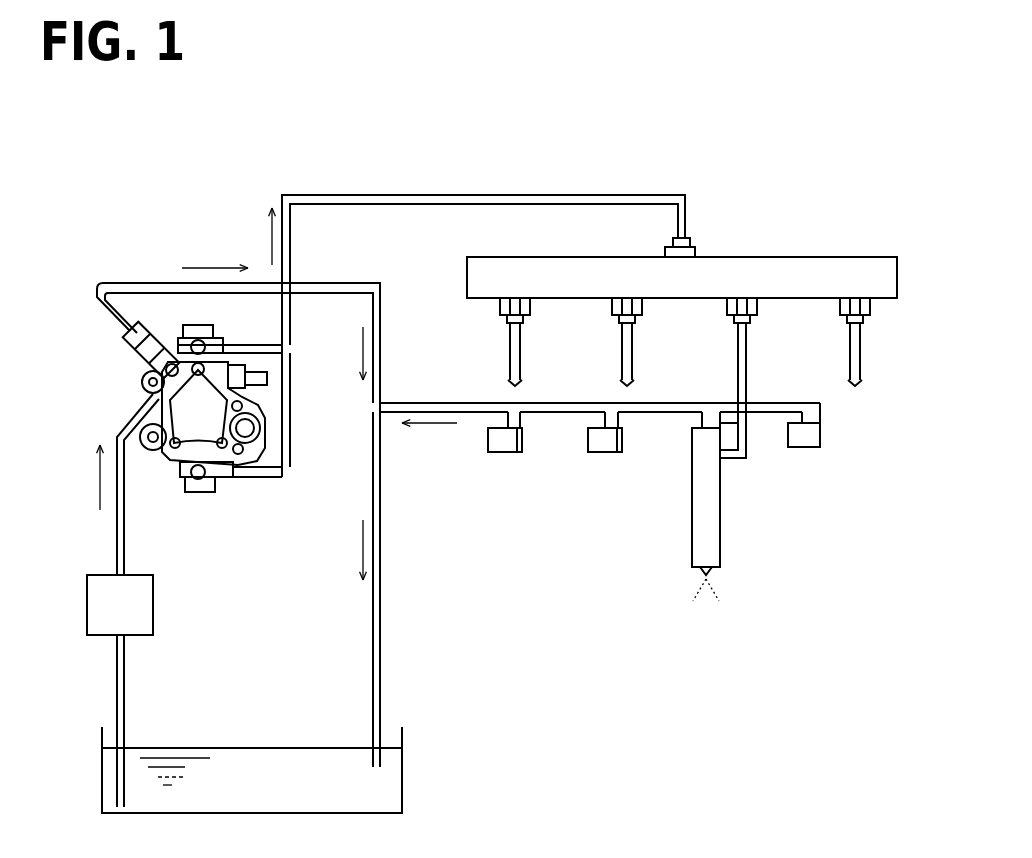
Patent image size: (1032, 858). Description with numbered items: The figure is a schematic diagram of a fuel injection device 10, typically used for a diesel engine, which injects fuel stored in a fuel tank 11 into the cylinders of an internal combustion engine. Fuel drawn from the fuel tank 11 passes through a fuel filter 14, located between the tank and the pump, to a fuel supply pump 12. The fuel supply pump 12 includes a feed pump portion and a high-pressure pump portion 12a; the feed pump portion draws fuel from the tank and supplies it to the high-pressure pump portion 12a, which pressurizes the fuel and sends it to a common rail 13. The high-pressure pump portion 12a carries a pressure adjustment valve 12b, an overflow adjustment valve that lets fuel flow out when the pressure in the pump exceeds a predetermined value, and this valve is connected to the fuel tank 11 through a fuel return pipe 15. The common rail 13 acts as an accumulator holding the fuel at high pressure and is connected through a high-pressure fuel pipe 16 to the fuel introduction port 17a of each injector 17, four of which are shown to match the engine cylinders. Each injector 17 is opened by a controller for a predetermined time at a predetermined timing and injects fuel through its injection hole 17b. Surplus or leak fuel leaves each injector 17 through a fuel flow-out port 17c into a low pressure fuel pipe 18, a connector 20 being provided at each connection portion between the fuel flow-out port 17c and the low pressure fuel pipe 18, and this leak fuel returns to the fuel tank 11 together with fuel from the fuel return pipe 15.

The fuel injection device 10 is at (185, 193).
The fuel tank 11 is at (402, 786).
The fuel supply pump 12 is at (163, 453).
The high-pressure pump portion 12a is at (210, 423).
The pressure adjustment valve 12b is at (134, 354).
The common rail 13 is at (793, 257).
The fuel filter 14 is at (153, 605).
The fuel return pipe 15 is at (328, 294).
The high-pressure fuel pipe 16 is at (507, 333).
The injector 17 is at (488, 445).
The fuel introduction port 17a is at (730, 458).
The injection hole 17b is at (710, 571).
The fuel flow-out port 17c is at (705, 420).
The low pressure fuel pipe 18 is at (468, 402).
The connector 20 is at (508, 424).